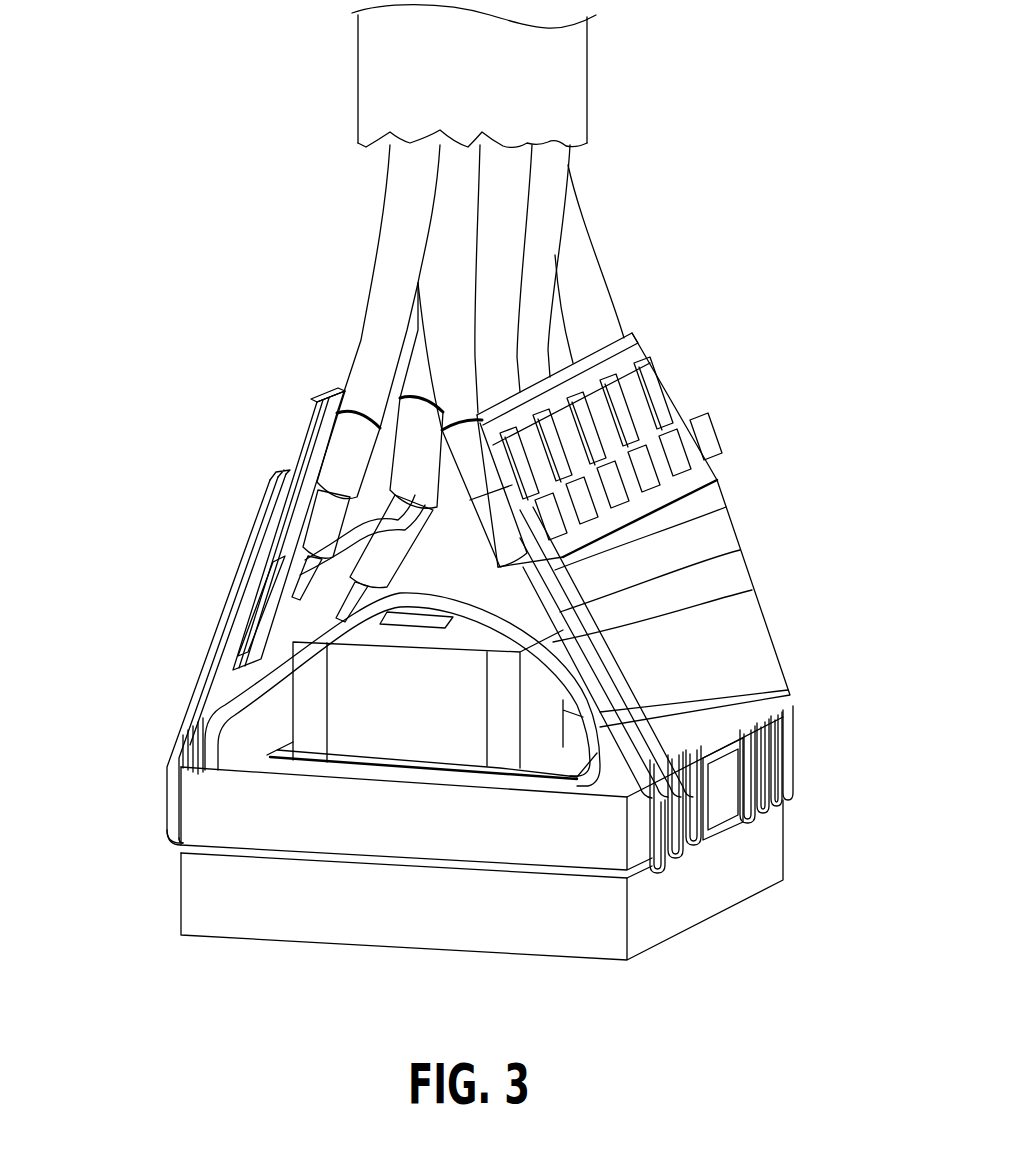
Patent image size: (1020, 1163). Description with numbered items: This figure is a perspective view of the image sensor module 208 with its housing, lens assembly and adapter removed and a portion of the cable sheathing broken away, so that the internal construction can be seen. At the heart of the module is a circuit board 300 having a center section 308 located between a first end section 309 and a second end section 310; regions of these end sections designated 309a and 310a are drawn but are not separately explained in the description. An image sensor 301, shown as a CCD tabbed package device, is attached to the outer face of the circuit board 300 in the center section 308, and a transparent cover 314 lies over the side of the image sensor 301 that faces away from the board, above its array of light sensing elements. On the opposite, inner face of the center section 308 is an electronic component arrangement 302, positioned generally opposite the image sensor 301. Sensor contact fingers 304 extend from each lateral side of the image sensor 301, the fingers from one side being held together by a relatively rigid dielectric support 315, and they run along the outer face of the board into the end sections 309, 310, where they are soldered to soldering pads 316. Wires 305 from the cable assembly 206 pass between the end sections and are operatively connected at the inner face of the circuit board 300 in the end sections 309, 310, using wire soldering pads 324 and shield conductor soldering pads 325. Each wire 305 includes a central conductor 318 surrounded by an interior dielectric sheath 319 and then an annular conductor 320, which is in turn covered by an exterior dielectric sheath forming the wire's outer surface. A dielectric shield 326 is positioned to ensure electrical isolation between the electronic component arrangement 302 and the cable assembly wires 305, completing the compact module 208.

The cable assembly 206 is at (577, 88).
The cable assembly wires 305 is at (440, 242).
The image sensor module 208 is at (750, 300).
The connector body top 309a is at (637, 333).
The annular conductor 320 is at (337, 462).
The soldering pads 316 is at (640, 405).
The sensor contact fingers 304 is at (660, 463).
The interior dielectric sheath 319 is at (320, 532).
The central conductor 318 is at (280, 583).
The dielectric shield 326 is at (757, 590).
The dielectric support 315 is at (177, 712).
The first end section 309 is at (735, 697).
The circuit board 300 is at (618, 758).
The connector body left 310a is at (337, 398).
The shield conductor soldering pads 325 is at (328, 432).
The second end section 310 is at (247, 608).
The wire soldering pads 324 is at (243, 647).
The electronic component arrangement 302 is at (367, 717).
The center section 308 is at (330, 773).
The image sensor 301 is at (290, 835).
The transparent cover 314 is at (515, 940).